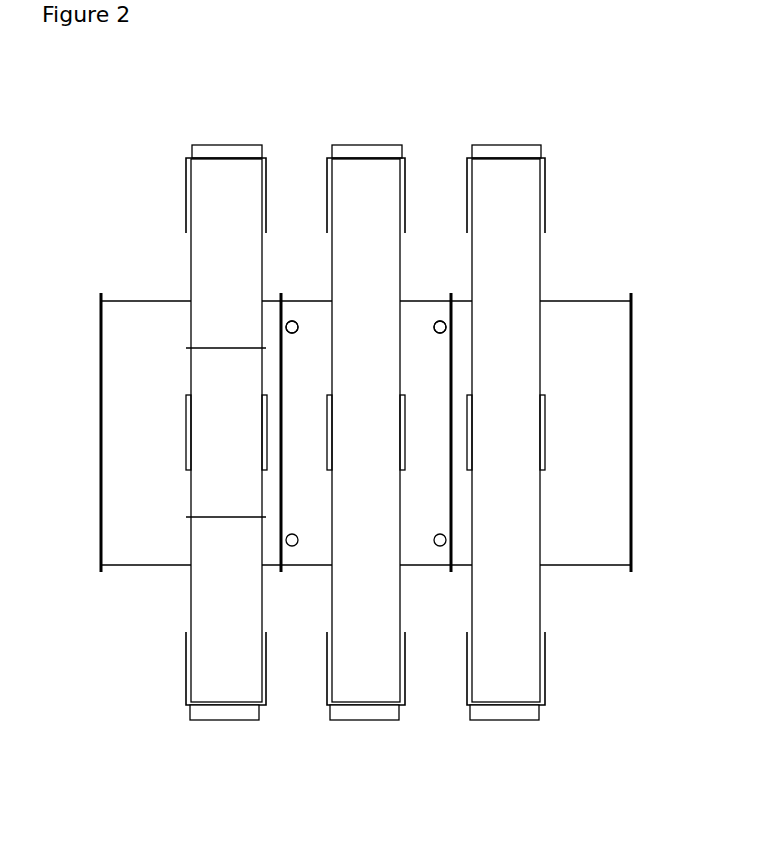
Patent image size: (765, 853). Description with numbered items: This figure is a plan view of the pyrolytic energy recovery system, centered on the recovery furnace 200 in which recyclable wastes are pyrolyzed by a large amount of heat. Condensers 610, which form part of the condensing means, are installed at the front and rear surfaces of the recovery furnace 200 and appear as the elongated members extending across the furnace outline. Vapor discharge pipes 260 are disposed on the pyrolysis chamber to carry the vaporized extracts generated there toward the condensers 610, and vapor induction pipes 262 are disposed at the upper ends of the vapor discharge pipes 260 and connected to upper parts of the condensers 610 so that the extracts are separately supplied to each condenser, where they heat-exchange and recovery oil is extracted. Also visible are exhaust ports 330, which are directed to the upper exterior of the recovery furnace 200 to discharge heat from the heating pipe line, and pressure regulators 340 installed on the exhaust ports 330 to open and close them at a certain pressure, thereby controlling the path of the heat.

The recovery furnace 200 is at (124, 296).
The vapor discharge pipe 260 is at (188, 447).
The vapor induction pipe 262 is at (200, 255).
The exhaust port 330 is at (292, 321).
The pressure regulator 340 is at (369, 265).
The condenser 610 is at (250, 141).